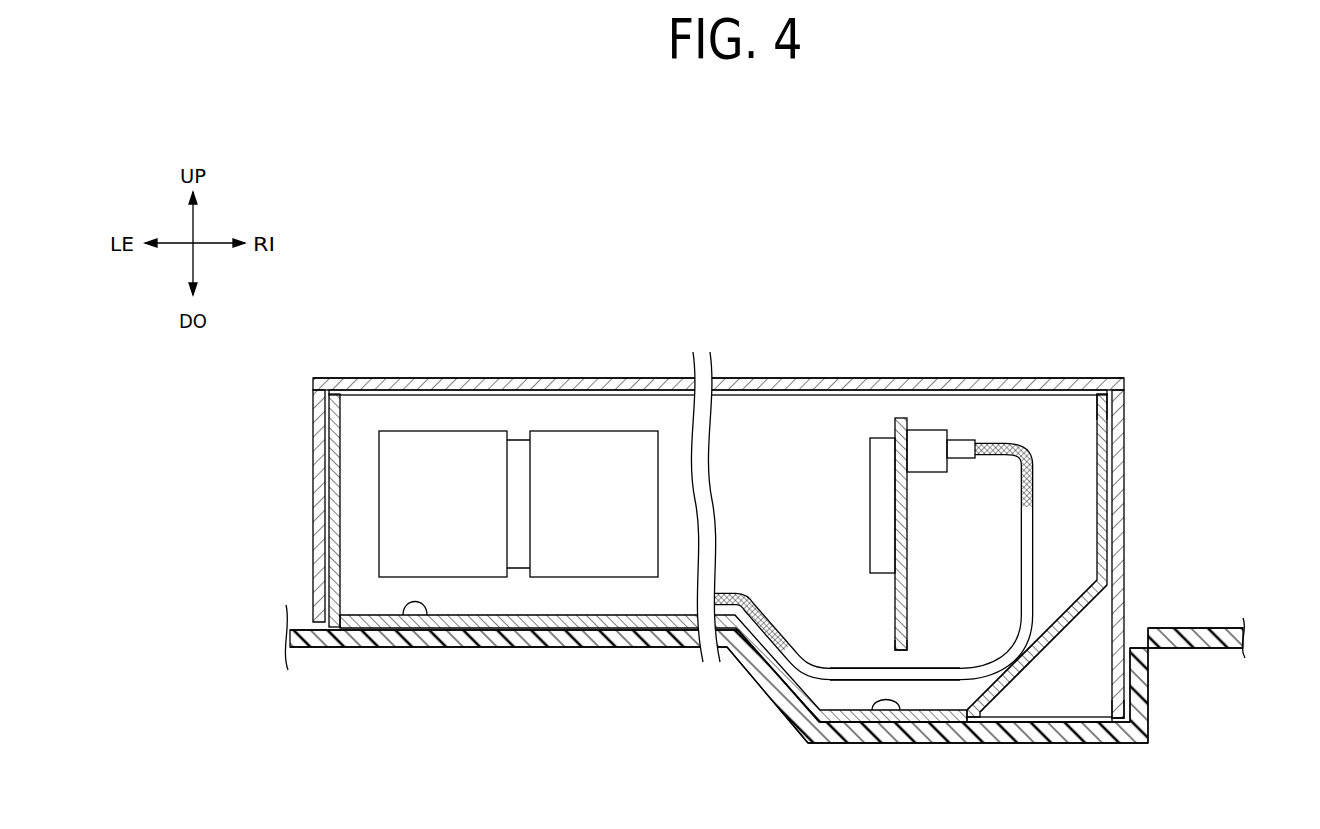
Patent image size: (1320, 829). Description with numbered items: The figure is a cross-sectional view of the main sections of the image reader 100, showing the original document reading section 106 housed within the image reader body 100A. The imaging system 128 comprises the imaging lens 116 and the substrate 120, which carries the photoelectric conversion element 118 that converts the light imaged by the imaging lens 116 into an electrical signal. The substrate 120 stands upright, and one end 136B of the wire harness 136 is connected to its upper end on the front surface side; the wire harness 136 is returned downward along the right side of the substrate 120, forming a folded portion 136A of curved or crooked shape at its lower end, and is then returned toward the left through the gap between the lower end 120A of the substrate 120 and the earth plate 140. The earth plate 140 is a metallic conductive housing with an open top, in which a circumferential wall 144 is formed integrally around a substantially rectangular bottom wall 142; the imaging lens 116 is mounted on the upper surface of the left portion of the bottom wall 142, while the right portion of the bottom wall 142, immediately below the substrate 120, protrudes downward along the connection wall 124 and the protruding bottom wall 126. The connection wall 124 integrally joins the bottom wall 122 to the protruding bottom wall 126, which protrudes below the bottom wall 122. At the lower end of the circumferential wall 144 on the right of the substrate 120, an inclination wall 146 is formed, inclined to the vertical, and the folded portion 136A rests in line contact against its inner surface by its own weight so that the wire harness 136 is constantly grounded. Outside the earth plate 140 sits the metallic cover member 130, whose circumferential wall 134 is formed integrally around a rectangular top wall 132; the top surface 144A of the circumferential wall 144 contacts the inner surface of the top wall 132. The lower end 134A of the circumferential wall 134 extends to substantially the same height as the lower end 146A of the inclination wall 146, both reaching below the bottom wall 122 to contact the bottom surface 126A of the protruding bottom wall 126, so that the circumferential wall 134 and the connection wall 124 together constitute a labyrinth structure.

The image reader 100 is at (1216, 275).
The image reader body 100A is at (1210, 648).
The original document reading section 106 is at (315, 658).
The imaging lens 116 is at (432, 431).
The photoelectric conversion element 118 is at (870, 490).
The substrate 120 is at (912, 594).
The lower end of substrate 120A is at (890, 655).
The bottom wall 122 is at (485, 650).
The connection wall 124 is at (767, 690).
The protruding bottom wall 126 is at (940, 745).
The bottom surface of protruding bottom wall 126A is at (878, 705).
The imaging system 128 is at (715, 537).
The cover member 130 is at (557, 374).
The top wall 132 is at (650, 378).
The circumferential wall 134 is at (313, 490).
The lower end of circumferential wall 134A is at (1115, 743).
The wire harness 136 is at (906, 489).
The folded portion 136A is at (1012, 678).
The one end of wire harness 136B is at (963, 440).
The earth plate 140 is at (704, 542).
The bottom wall of earth plate 142 is at (412, 628).
The circumferential wall of earth plate 144 is at (342, 556).
The top surface of circumferential wall 144A is at (1110, 378).
The inclination wall 146 is at (1090, 628).
The lower end of inclination wall 146A is at (970, 722).